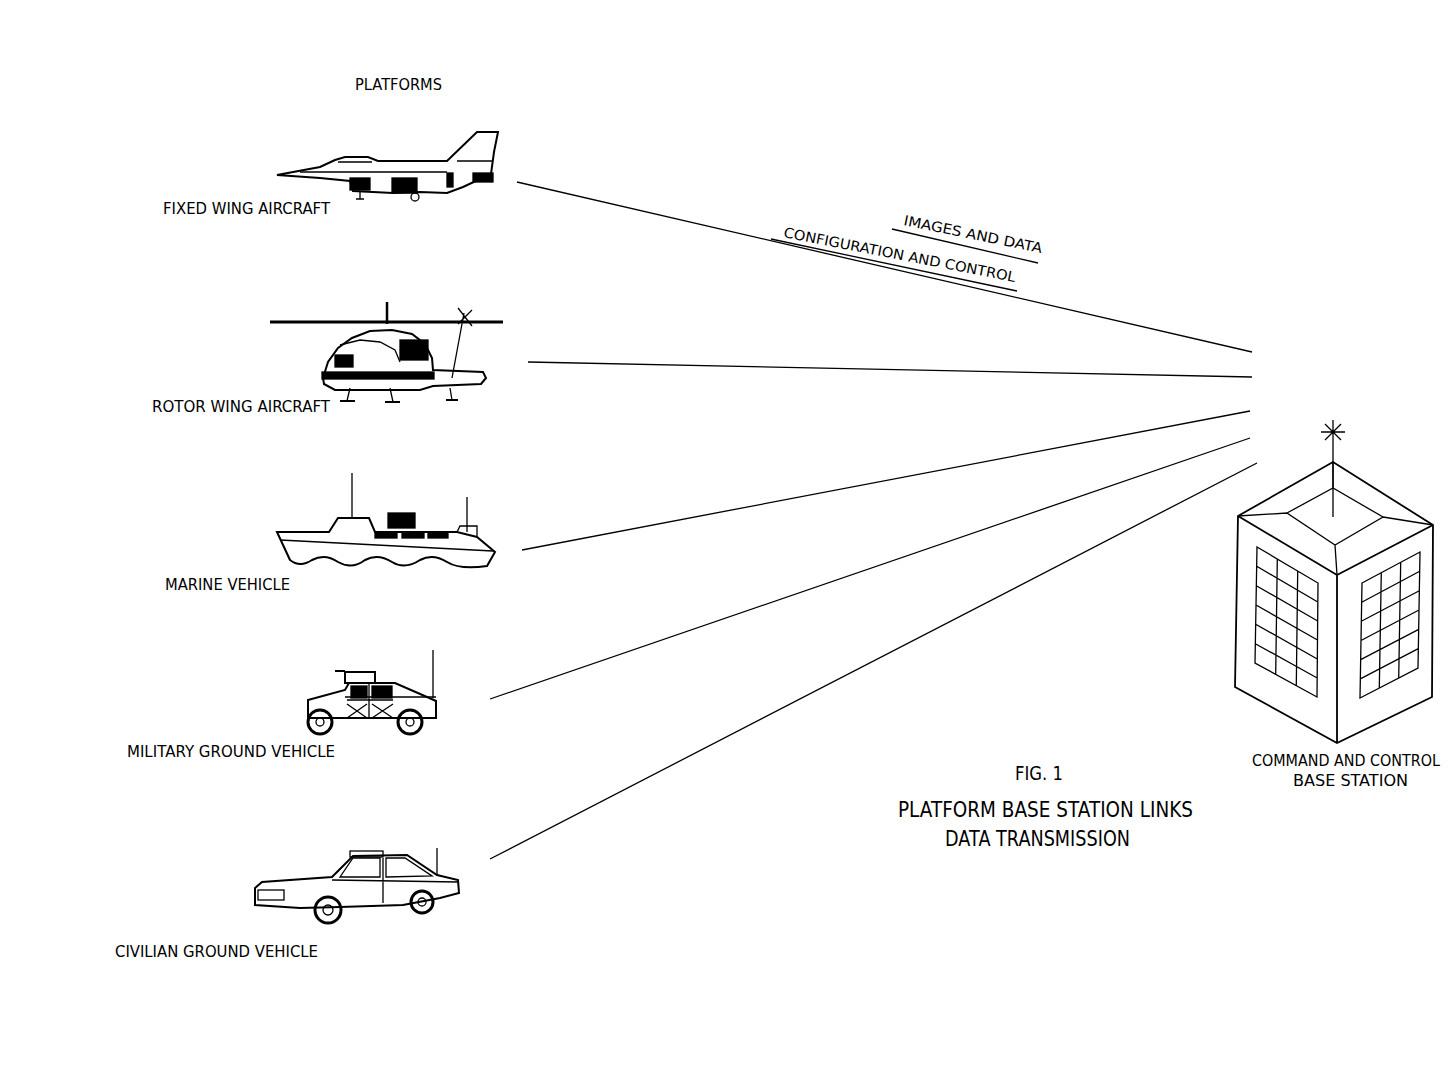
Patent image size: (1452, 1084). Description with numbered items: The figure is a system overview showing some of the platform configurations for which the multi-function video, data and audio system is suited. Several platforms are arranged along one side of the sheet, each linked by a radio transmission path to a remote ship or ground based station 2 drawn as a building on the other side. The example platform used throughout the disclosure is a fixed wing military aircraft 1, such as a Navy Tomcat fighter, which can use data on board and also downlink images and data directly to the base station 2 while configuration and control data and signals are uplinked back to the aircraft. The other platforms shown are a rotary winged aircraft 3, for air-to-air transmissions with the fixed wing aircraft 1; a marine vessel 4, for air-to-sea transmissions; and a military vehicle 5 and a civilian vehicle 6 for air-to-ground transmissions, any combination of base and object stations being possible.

The fixed wing military aircraft 1 is at (387, 162).
The ship or ground based station 2 is at (1334, 581).
The rotary winged aircraft 3 is at (386, 348).
The marine vessel 4 is at (386, 520).
The military vehicle 5 is at (372, 692).
The civilian vehicle 6 is at (357, 876).